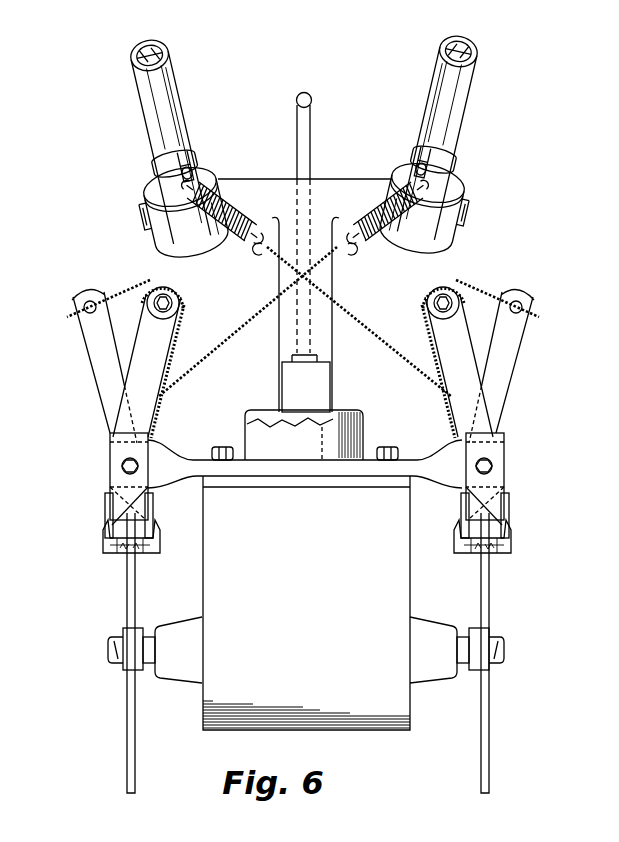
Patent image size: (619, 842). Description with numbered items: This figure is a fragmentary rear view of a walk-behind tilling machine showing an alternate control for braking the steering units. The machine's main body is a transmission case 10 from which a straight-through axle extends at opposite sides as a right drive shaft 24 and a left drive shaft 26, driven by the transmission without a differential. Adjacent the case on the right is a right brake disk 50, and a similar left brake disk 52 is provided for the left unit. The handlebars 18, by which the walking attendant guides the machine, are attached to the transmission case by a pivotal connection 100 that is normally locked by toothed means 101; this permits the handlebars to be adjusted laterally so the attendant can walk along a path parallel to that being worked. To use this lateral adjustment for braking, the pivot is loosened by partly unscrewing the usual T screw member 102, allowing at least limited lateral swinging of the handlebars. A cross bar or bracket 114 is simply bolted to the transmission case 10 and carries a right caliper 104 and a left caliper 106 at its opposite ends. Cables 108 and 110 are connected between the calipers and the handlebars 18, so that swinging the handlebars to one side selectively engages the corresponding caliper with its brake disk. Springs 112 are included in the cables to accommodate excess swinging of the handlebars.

The transmission case 10 is at (298, 677).
The handlebars 18 is at (143, 128).
The right drive shaft 24 is at (505, 649).
The left drive shaft 26 is at (108, 649).
The right brake disk 50 is at (489, 720).
The left brake disk 52 is at (128, 757).
The pivotal connection 100 is at (333, 381).
The toothed means 101 is at (345, 406).
The T screw member 102 is at (304, 92).
The right caliper 104 is at (522, 497).
The left caliper 106 is at (93, 521).
The cable 108 is at (385, 337).
The cable 110 is at (218, 340).
The springs 112 is at (226, 187).
The cross bar or bracket 114 is at (277, 472).